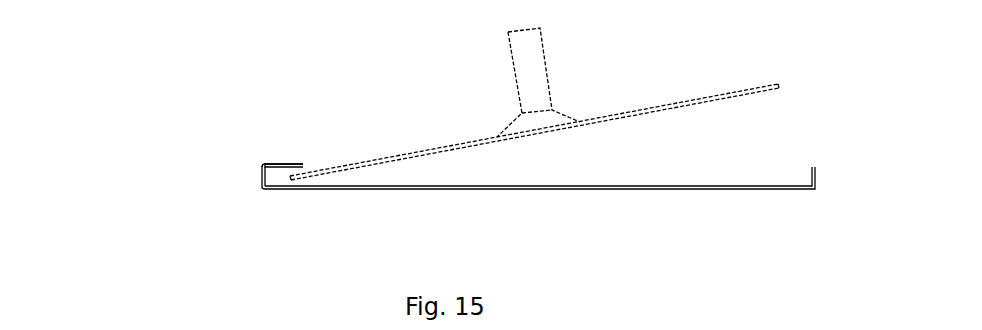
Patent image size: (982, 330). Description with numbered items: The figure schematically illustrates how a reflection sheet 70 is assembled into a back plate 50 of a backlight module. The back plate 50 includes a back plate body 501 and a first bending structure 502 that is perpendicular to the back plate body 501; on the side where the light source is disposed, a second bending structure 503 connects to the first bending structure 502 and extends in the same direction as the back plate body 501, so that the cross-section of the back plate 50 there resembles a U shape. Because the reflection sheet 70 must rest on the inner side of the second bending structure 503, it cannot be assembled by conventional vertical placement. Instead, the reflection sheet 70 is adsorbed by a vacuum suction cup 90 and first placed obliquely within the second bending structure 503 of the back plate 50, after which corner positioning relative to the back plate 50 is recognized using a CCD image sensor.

The back plate 50 is at (71, 127).
The back plate body 501 is at (287, 187).
The first bending structure 502 is at (262, 176).
The second bending structure 503 is at (282, 165).
The reflection sheet 70 is at (742, 93).
The vacuum suction cup 90 is at (522, 43).